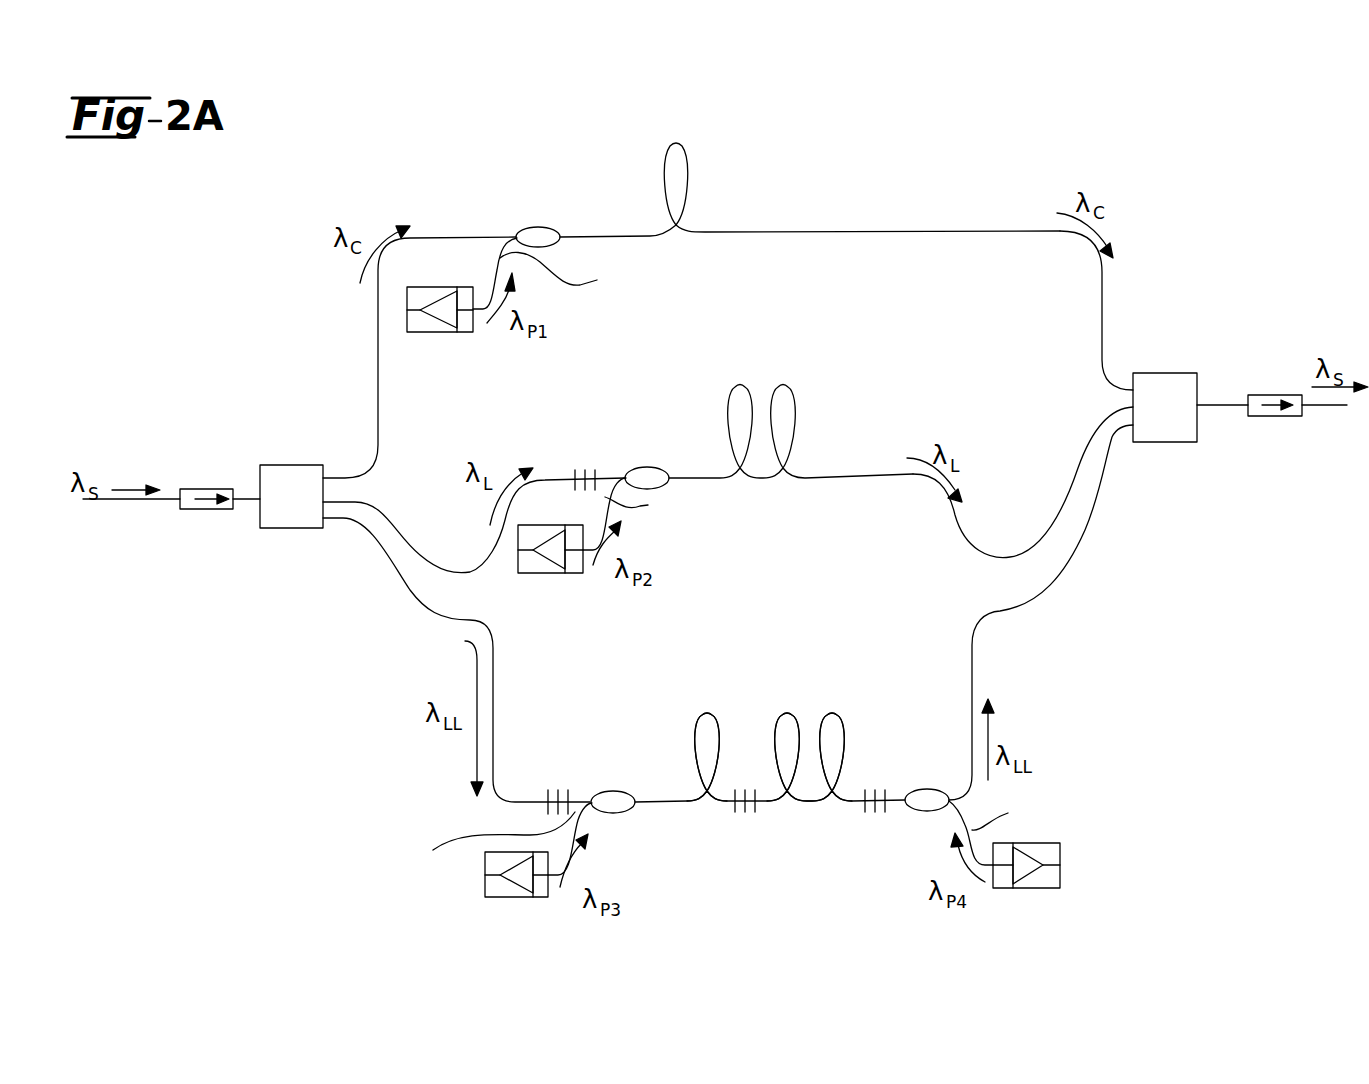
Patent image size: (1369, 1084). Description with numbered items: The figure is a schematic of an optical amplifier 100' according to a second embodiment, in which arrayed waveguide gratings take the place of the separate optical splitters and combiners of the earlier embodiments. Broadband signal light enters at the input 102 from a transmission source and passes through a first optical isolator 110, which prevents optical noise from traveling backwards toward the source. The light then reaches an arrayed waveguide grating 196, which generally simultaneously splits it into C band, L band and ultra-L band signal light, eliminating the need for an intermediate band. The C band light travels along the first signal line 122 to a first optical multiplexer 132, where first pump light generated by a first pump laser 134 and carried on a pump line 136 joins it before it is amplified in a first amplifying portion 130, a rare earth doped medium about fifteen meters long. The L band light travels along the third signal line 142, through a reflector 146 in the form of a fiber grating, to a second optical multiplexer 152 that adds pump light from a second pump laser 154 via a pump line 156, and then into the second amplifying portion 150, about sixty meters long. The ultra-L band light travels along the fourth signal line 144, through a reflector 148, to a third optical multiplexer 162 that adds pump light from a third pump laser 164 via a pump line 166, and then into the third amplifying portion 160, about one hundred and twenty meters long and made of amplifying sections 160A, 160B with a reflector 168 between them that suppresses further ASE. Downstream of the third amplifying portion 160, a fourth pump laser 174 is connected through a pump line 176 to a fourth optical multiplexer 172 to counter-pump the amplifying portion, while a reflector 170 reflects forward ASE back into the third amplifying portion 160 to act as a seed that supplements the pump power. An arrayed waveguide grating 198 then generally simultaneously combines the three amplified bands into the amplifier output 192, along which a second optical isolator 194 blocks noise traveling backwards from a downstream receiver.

The optical amplifier 100' is at (479, 138).
The input 102 is at (120, 501).
The first optical isolator 110 is at (205, 488).
The first signal line 122 is at (378, 338).
The first amplifying portion 130 is at (662, 180).
The first optical multiplexer 132 is at (538, 227).
The first pump laser 134 is at (440, 287).
The pump line 136 is at (573, 277).
The third signal line 142 is at (562, 480).
The fourth signal line 144 is at (497, 803).
The reflector 146 is at (586, 470).
The reflector 148 is at (552, 790).
The second amplifying portion 150 is at (737, 392).
The second optical multiplexer 152 is at (650, 467).
The second pump laser 154 is at (548, 573).
The pump line 156 is at (652, 505).
The third amplifying portion 160 is at (845, 697).
The amplifying section 160A is at (694, 727).
The amplifying section 160B is at (846, 727).
The third optical multiplexer 162 is at (614, 792).
The third pump laser 164 is at (485, 875).
The pump line 166 is at (480, 847).
The reflector 168 is at (735, 812).
The reflector 170 is at (865, 812).
The fourth optical multiplexer 172 is at (930, 789).
The fourth pump laser 174 is at (1060, 852).
The pump line 176 is at (1015, 813).
The amplifier output 192 is at (1225, 405).
The second optical isolator 194 is at (1272, 395).
The arrayed waveguide grating 196 is at (292, 465).
The arrayed waveguide grating 198 is at (1165, 373).